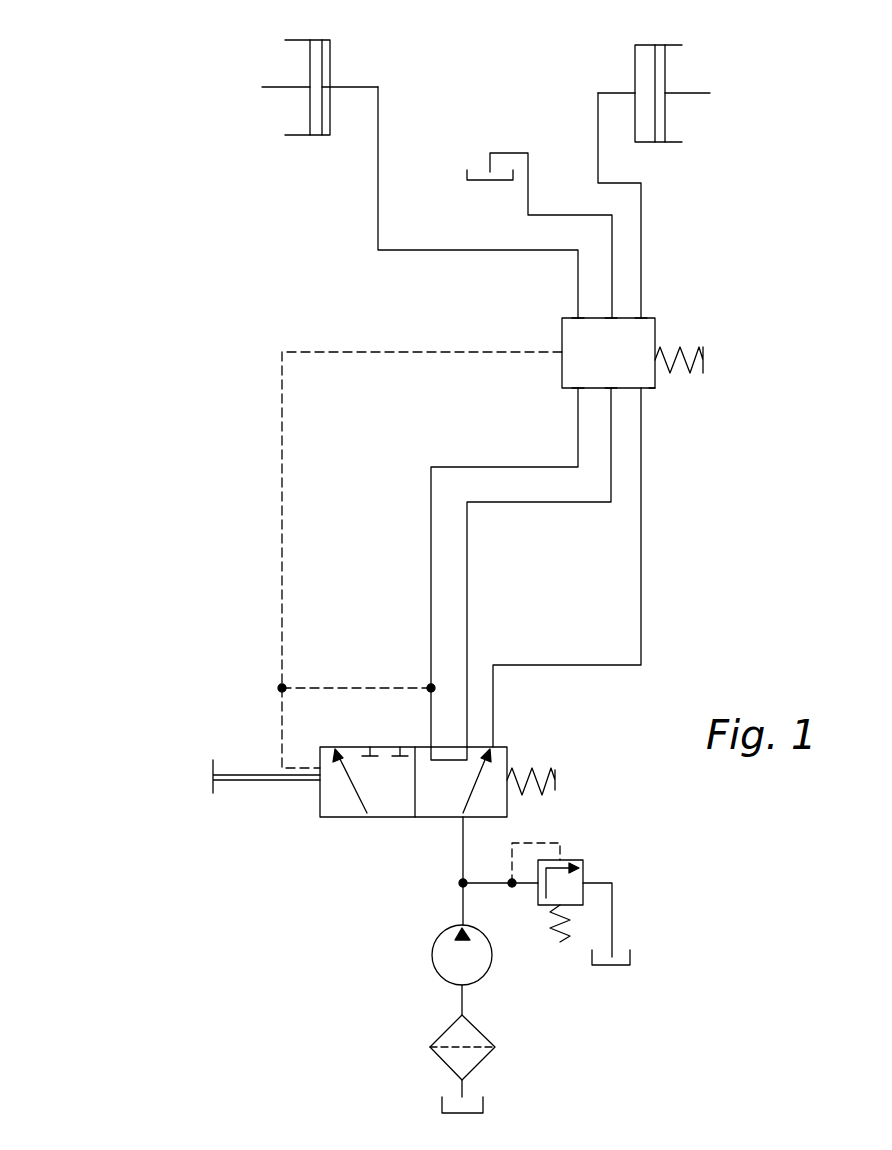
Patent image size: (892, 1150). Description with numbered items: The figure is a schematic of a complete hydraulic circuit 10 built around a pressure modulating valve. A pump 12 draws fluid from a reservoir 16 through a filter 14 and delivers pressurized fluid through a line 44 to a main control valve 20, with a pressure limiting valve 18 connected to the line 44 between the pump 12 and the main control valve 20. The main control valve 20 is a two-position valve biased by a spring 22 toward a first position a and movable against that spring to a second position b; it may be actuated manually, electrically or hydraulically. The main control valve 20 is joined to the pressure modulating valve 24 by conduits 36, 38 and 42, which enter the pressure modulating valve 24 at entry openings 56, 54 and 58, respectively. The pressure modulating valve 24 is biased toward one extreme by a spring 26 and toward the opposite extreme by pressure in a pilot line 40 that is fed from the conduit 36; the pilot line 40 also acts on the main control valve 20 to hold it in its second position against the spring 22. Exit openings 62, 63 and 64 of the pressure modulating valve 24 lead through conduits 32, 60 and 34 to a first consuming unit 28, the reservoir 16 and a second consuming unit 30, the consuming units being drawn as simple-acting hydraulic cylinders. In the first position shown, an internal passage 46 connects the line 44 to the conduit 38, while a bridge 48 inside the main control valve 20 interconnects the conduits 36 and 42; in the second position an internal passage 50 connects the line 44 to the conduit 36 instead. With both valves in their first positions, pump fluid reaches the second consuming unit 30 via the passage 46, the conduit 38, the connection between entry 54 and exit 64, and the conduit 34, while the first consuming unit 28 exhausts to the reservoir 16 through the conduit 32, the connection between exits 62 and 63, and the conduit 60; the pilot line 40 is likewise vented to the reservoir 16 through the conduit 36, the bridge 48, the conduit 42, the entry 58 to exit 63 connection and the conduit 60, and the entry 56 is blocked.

The hydraulic circuit 10 is at (752, 418).
The pump 12 is at (492, 955).
The filter 14 is at (495, 1040).
The reservoir 16 is at (467, 172).
The pressure limiting valve 18 is at (585, 862).
The main control valve 20 is at (508, 751).
The spring 22 is at (557, 771).
The pressure modulating valve 24 is at (656, 324).
The spring 26 is at (703, 362).
The first consuming unit 28 is at (330, 53).
The second consuming unit 30 is at (647, 53).
The conduit 32 is at (378, 220).
The conduit 34 is at (641, 198).
The conduit 36 is at (431, 496).
The conduit 38 is at (641, 578).
The pilot line 40 is at (282, 590).
The conduit 42 is at (467, 531).
The line 44 is at (461, 866).
The internal passage 46 is at (473, 791).
The bridge 48 is at (433, 760).
The internal passage 50 is at (356, 791).
The entry opening 54 is at (655, 389).
The entry opening 56 is at (578, 391).
The entry opening 58 is at (612, 390).
The conduit 60 is at (549, 218).
The exit opening 62 is at (578, 317).
The exit opening 63 is at (608, 316).
The exit opening 64 is at (641, 316).
The first position a is at (485, 819).
The second position b is at (345, 819).